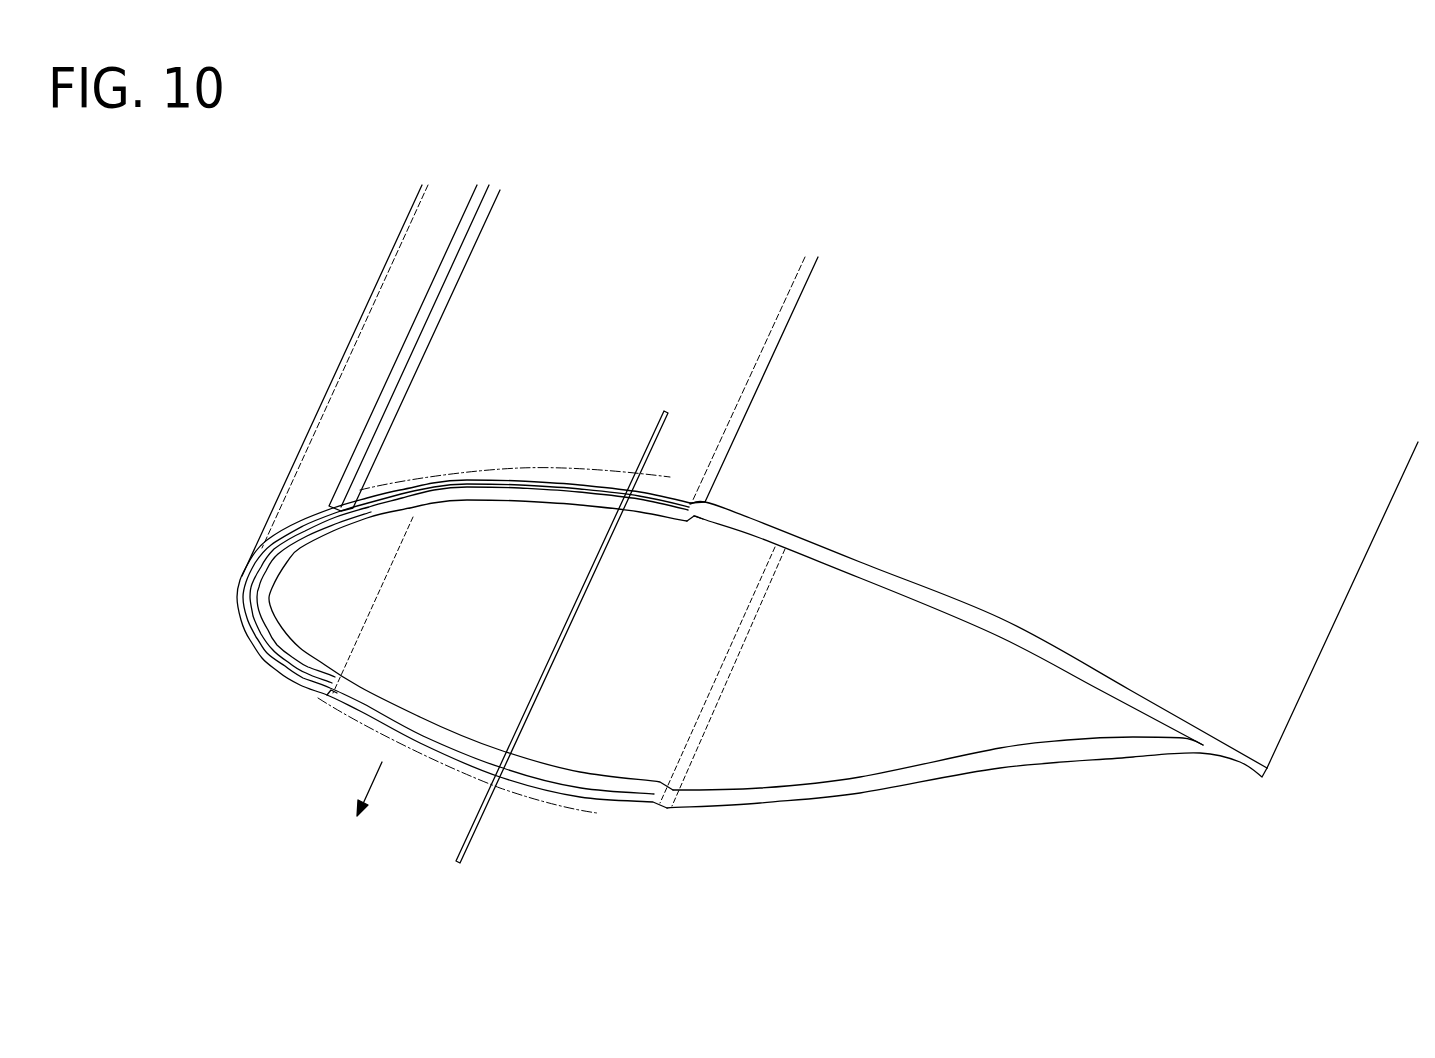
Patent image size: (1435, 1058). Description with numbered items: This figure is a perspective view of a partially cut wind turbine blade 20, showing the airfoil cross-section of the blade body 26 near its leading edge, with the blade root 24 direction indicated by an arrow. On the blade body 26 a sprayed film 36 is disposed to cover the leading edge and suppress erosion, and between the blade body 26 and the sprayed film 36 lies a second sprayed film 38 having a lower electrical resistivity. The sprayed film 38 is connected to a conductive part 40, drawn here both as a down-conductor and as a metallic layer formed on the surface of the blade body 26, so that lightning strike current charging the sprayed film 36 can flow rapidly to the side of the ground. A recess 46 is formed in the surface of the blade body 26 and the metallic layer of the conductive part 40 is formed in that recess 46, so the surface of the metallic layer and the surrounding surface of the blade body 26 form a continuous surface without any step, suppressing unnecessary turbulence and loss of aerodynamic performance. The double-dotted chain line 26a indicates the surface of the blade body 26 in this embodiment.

The wind turbine blade 20 is at (212, 266).
The blade root 24 is at (358, 809).
The blade body 26 is at (1297, 641).
The double-dotted chain line 26a is at (487, 465).
The sprayed film (first sprayed layer) 36 is at (310, 430).
The sprayed film (second sprayed layer) 38 is at (337, 368).
The conductive part 40 is at (490, 295).
The recess 46 is at (573, 482).